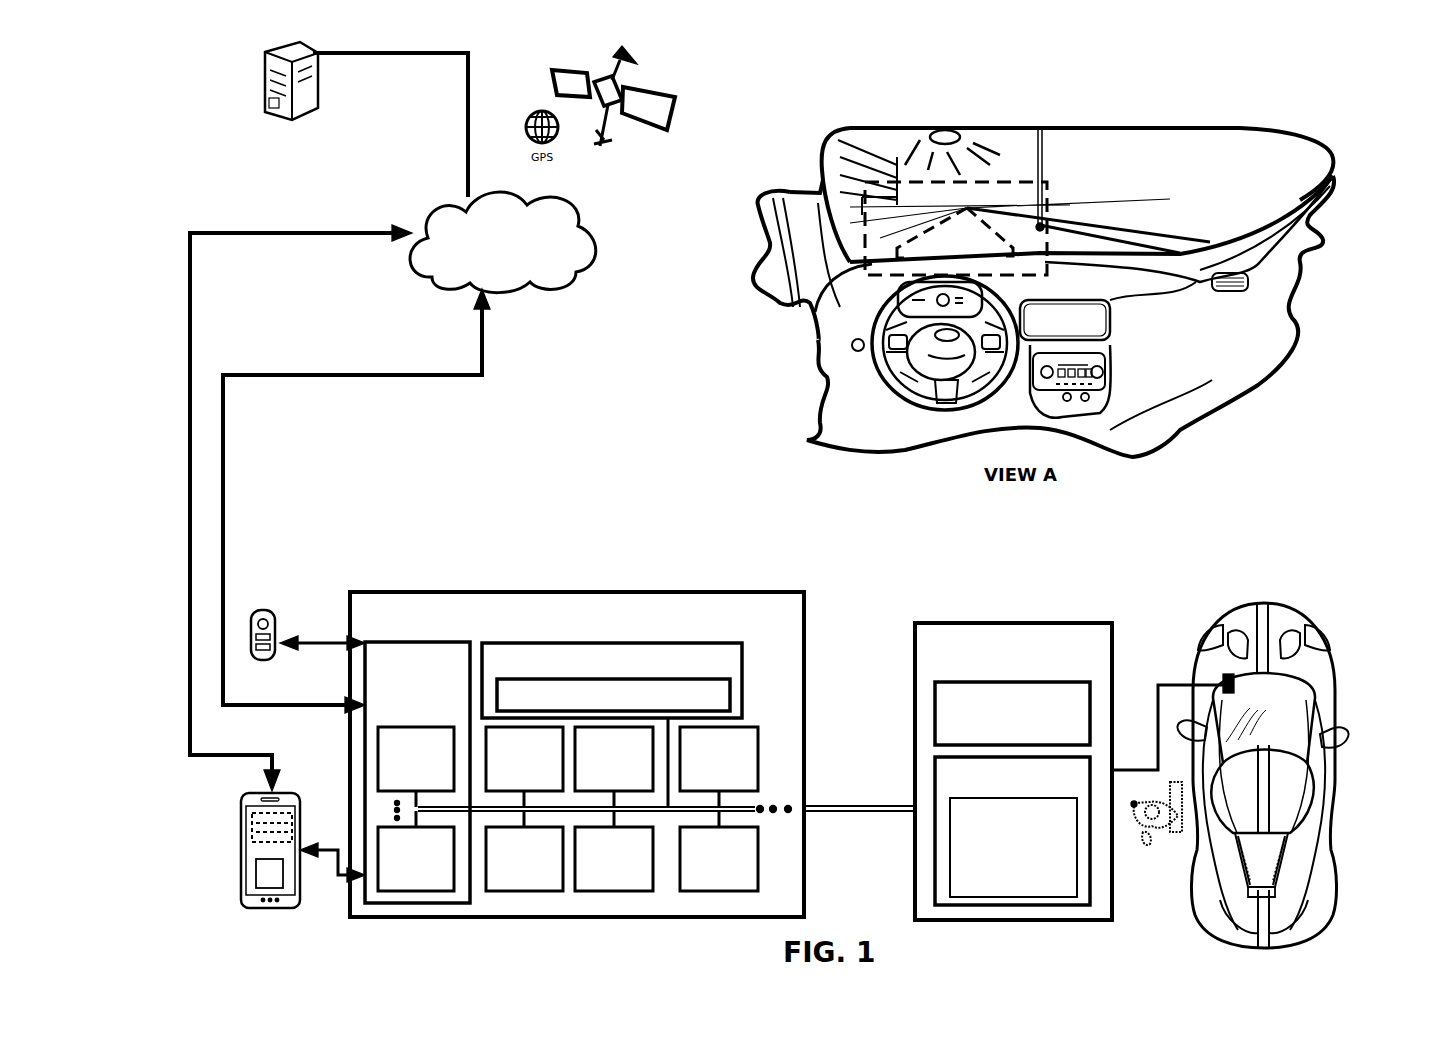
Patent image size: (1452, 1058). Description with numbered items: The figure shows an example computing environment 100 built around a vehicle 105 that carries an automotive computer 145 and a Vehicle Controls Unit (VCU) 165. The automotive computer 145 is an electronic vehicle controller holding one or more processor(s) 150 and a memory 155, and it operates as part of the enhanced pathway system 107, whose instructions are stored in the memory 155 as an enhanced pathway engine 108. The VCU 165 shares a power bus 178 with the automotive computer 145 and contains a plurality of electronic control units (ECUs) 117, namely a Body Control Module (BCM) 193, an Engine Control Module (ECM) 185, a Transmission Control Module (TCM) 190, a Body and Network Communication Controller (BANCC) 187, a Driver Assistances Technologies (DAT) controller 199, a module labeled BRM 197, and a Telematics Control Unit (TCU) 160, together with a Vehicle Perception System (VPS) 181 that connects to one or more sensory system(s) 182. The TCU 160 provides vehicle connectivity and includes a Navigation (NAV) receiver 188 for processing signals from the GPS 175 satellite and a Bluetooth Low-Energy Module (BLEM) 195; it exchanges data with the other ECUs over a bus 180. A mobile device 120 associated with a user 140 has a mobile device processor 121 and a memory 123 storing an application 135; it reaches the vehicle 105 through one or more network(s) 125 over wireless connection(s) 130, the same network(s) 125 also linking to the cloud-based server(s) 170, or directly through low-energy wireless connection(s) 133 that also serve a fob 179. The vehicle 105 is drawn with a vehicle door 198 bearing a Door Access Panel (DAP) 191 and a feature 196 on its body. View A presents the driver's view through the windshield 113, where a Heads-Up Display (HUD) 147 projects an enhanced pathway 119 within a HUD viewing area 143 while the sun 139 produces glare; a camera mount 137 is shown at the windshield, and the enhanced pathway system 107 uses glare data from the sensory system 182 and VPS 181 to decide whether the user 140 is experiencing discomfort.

The computing environment 100 is at (1402, 118).
The vehicle 105 is at (1297, 775).
The enhanced pathway system 107 is at (1128, 632).
The enhanced pathway engine 108 is at (1013, 847).
The windshield 113 is at (1220, 157).
The electronic control units (ECUs) 117 is at (790, 750).
The enhanced pathway 119 is at (850, 262).
The mobile device 120 is at (225, 848).
The mobile device processor 121 is at (254, 817).
The memory 123 is at (254, 831).
The network(s) 125 is at (503, 242).
The wireless connection(s) 130 is at (268, 233).
The wireless connection(s) 133 is at (322, 642).
The application 135 is at (256, 873).
The camera mount 137 is at (1047, 245).
The sun 139 is at (948, 128).
The user 140 is at (1168, 835).
The HUD viewing area 143 is at (963, 208).
The automotive computer 145 is at (1013, 771).
The Heads-Up Display (HUD) 147 is at (897, 262).
The processor(s) 150 is at (1012, 713).
The memory 155 is at (1012, 831).
The Telematics Control Unit (TCU) 160 is at (417, 772).
The Vehicle Controls Unit (VCU) 165 is at (607, 754).
The server(s) 170 is at (288, 94).
The Global Positioning System (GPS) 175 is at (650, 83).
The power bus 178 is at (818, 806).
The fob 179 is at (264, 648).
The bus 180 is at (757, 812).
The Vehicle Perception System (VPS) 181 is at (612, 680).
The sensory system(s) 182 is at (613, 695).
The Engine Control Module (ECM) 185 is at (614, 759).
The Body and Network Communication Controller (BANCC) 187 is at (614, 859).
The Navigation (NAV) receiver 188 is at (416, 759).
The Transmission Control Module (TCM) 190 is at (524, 859).
The Door Access Panel (DAP) 191 is at (1349, 737).
The Body Control Module (BCM) 193 is at (524, 759).
The Bluetooth Low-Energy Module (BLEM) 195 is at (416, 859).
The windshield of vehicle 196 is at (1322, 745).
The body restraint module (BRM) 197 is at (719, 759).
The vehicle door 198 is at (1323, 802).
The Driver Assistances Technologies (DAT) controller 199 is at (719, 859).